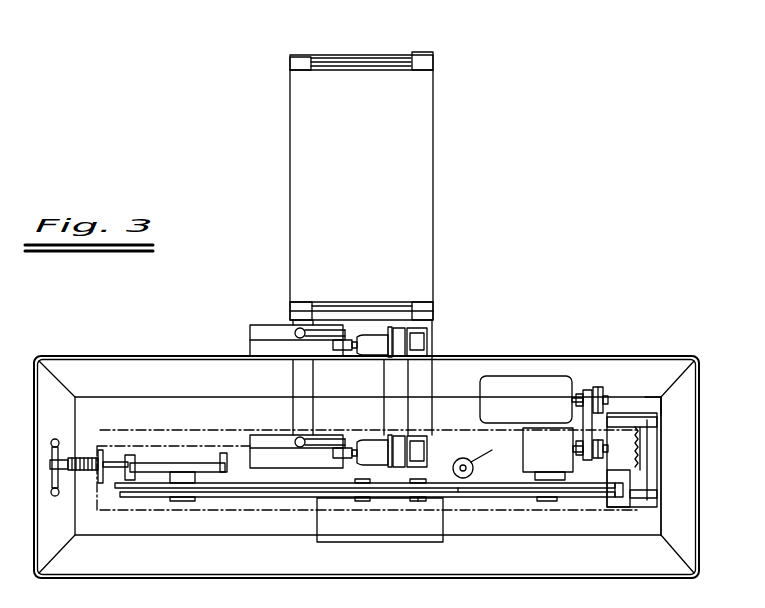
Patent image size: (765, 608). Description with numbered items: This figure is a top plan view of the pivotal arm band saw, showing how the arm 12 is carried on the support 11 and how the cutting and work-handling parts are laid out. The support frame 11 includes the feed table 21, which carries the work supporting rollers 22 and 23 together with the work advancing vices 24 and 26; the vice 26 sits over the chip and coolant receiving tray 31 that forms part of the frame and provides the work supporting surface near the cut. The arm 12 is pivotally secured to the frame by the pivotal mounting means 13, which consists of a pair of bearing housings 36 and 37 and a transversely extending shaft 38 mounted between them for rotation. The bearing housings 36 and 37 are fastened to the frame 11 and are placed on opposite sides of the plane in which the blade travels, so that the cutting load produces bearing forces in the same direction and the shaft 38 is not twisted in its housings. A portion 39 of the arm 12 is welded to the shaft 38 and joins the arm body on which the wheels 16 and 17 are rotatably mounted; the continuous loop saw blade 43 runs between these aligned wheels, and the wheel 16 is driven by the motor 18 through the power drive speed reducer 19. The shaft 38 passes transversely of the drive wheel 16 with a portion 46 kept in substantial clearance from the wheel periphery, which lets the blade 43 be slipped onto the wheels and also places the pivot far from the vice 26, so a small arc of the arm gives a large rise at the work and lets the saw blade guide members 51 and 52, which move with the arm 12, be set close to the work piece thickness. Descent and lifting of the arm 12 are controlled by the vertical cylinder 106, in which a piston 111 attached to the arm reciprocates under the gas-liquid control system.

The support 11 is at (137, 354).
The arm 12 is at (493, 466).
The pivotal mounting means 13 is at (657, 466).
The wheel 16 is at (590, 492).
The wheel 17 is at (120, 498).
The motor 18 is at (536, 410).
The power drive speed reducer 19 is at (556, 460).
The feed table 21 is at (373, 160).
The work supporting roller 22 is at (372, 60).
The work supporting roller 23 is at (398, 303).
The work advancing vice 24 is at (428, 343).
The work advancing vice 26 is at (422, 452).
The chip and coolant receiving tray 31 is at (630, 372).
The bearing housing 36 is at (662, 406).
The bearing housing 37 is at (656, 507).
The shaft 38 is at (652, 447).
The portion of arm 39 is at (635, 418).
The saw blade 43 is at (458, 492).
The portion of shaft 46 is at (650, 486).
The saw blade guide member 51 is at (362, 500).
The saw blade guide member 52 is at (418, 500).
The cylinder 106 is at (466, 458).
The piston 111 is at (498, 450).